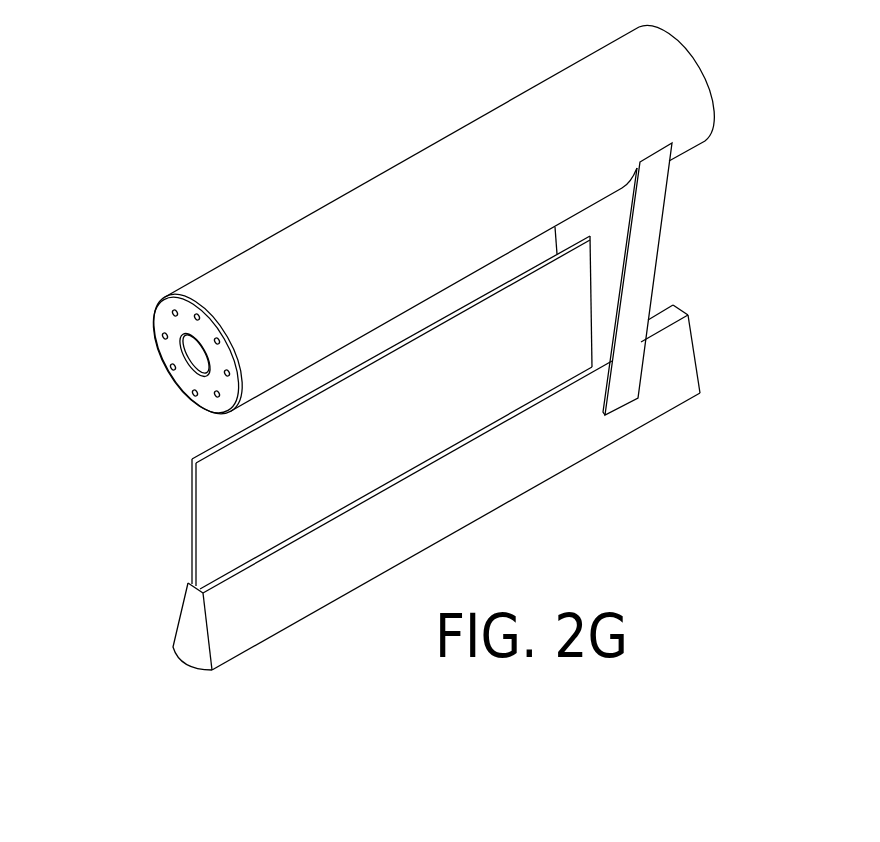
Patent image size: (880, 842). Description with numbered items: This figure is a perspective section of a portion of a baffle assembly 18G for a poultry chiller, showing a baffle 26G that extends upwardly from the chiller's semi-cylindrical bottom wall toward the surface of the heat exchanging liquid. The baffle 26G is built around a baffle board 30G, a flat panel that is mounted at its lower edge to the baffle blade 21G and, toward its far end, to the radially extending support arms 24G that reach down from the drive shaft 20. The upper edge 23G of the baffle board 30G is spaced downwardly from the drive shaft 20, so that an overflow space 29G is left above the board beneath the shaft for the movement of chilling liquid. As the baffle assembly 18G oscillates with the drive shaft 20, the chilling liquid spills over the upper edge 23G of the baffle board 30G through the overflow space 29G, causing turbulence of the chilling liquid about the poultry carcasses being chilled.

The drive shaft 20 is at (437, 170).
The upper edge 23G is at (315, 441).
The radially extending support arms 24G is at (650, 270).
The overflow space 29G is at (222, 428).
The baffle board 30G is at (218, 478).
The baffle 26G is at (193, 523).
The baffle assembly 18G is at (436, 492).
The baffle blade 21G is at (252, 610).